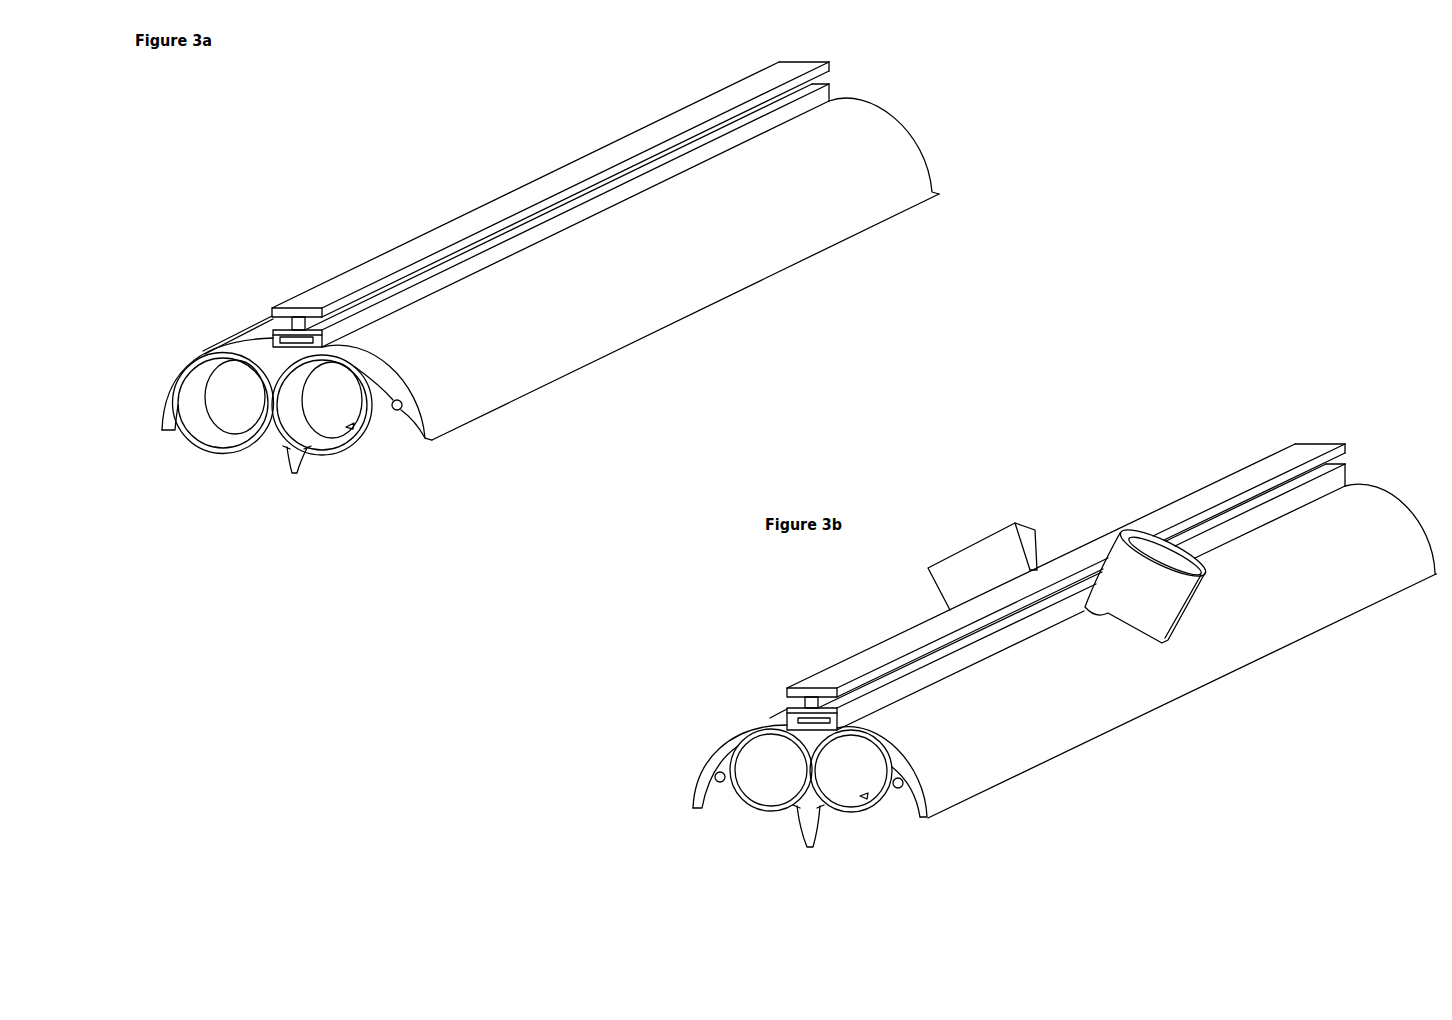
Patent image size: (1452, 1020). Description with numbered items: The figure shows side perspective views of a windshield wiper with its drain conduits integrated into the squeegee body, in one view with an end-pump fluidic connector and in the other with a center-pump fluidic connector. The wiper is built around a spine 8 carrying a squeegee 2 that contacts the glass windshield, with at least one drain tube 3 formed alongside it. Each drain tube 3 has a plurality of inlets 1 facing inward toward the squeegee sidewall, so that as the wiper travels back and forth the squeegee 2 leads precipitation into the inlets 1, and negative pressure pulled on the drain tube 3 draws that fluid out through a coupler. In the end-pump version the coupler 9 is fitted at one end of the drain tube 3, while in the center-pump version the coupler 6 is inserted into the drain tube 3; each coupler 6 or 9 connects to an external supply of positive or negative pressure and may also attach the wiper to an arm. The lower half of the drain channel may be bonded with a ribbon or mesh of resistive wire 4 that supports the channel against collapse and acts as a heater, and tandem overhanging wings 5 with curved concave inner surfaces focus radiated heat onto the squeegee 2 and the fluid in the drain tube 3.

In FIG. 3A, the inlets 1 is at (350, 427).
In FIG. 3B, the inlets 1 is at (865, 797).
In FIG. 3A, the squeegee 2 is at (307, 465).
In FIG. 3B, the squeegee 2 is at (820, 830).
In FIG. 3A, the drain tube 3 is at (372, 333).
In FIG. 3B, the drain tube 3 is at (850, 777).
In FIG. 3A, the resistive wire 4 is at (403, 413).
In FIG. 3B, the resistive wire 4 is at (718, 772).
In FIG. 3A, the overhanging wings 5 is at (165, 415).
In FIG. 3B, the overhanging wings 5 is at (703, 790).
In FIG. 3B, the coupler 6 is at (990, 568).
In FIG. 3A, the spine 8 is at (430, 240).
In FIG. 3B, the spine 8 is at (1230, 490).
In FIG. 3A, the coupler 9 is at (305, 428).